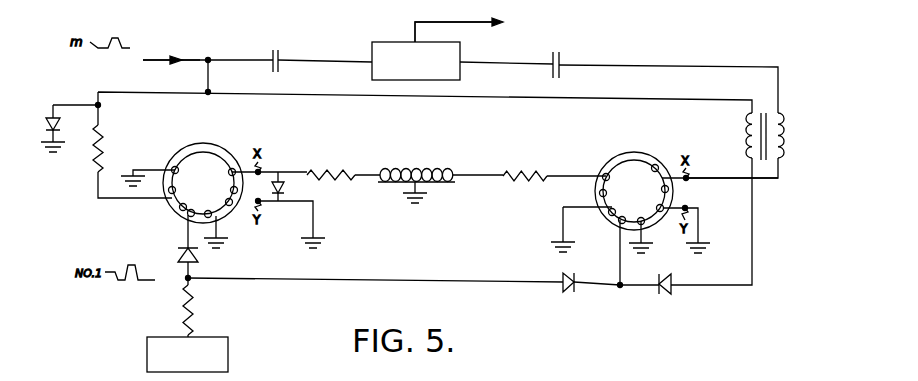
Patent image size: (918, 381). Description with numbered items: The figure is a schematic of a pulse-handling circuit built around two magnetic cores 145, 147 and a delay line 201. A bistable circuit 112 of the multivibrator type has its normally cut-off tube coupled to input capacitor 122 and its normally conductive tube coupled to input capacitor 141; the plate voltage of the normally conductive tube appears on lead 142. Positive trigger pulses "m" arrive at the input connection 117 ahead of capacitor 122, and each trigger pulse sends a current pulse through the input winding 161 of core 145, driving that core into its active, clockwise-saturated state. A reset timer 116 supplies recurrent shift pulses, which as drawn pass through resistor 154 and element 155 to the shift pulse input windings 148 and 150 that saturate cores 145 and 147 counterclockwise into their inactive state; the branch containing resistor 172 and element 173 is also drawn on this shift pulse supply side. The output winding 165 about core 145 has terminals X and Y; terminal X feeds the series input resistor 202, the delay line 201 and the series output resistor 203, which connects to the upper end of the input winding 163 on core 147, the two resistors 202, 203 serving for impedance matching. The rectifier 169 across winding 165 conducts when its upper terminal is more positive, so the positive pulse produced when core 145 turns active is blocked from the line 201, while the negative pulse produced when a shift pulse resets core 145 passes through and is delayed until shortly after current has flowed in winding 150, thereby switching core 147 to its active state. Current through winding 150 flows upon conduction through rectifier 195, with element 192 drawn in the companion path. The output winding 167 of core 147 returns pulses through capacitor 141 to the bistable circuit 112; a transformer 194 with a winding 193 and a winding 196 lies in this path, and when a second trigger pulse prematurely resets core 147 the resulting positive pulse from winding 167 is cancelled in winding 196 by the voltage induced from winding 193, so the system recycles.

The bistable circuit 112 is at (462, 78).
The reset timer 116 is at (232, 344).
The input signal line 117 is at (172, 62).
The input capacitor 122 is at (273, 54).
The input capacitor 141 is at (563, 56).
The lead 142 is at (494, 28).
The core 145 is at (222, 152).
The core 147 is at (630, 153).
The shift pulse input winding 148 is at (170, 210).
The shift pulse input winding 150 is at (614, 216).
The resistor 154 is at (196, 303).
The diode 155 is at (202, 258).
The input winding 161 is at (180, 165).
The input winding 163 is at (600, 191).
The output winding 165 is at (203, 183).
The output winding 167 is at (698, 203).
The rectifier 169 is at (294, 188).
The resistor 172 is at (97, 160).
The diode 173 is at (44, 100).
The diode 192 is at (558, 291).
The winding 193 is at (746, 124).
The transformer 194 is at (785, 116).
The rectifier 195 is at (680, 292).
The winding 196 is at (783, 172).
The delay line 201 is at (412, 165).
The input resistor 202 is at (312, 172).
The output resistor 203 is at (516, 170).